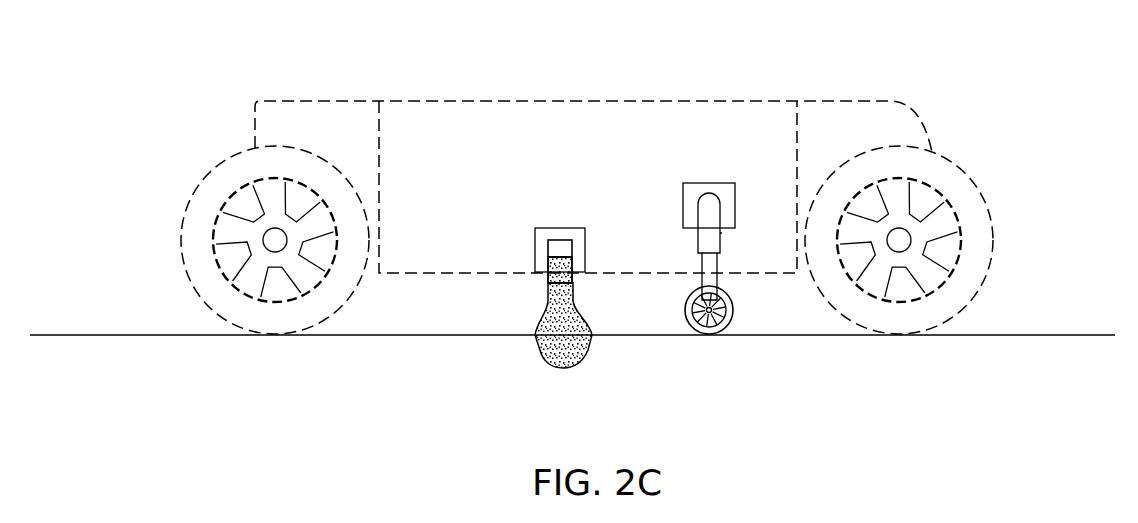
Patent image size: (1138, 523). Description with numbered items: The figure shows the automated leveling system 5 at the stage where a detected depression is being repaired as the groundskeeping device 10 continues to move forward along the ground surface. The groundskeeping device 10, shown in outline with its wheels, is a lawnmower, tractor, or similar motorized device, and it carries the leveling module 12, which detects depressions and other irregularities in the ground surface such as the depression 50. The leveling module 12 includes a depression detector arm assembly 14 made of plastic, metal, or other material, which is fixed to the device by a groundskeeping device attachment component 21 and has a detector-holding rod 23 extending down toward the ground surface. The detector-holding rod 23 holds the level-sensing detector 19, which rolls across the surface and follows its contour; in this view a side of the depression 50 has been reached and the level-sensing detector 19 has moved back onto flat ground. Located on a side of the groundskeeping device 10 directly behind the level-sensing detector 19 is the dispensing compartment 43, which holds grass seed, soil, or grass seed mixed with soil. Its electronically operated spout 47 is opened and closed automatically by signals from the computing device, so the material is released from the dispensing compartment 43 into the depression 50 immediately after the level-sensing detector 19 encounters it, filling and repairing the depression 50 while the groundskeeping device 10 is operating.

The automated leveling system 5 is at (145, 136).
The groundskeeping device 10 is at (418, 57).
The leveling module 12 is at (697, 194).
The depression detector arm assembly 14 is at (682, 243).
The level-sensing detector 19 is at (699, 337).
The groundskeeping device attachment component 21 is at (732, 172).
The detector-holding rod 23 is at (722, 233).
The dispensing compartment 43 is at (555, 225).
The electronically operated spout 47 is at (546, 257).
The depression 50 is at (547, 379).